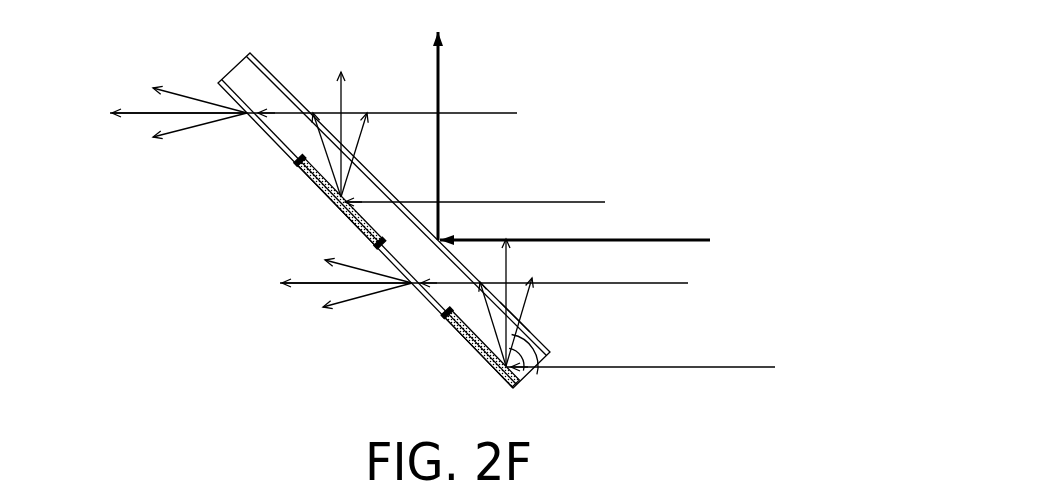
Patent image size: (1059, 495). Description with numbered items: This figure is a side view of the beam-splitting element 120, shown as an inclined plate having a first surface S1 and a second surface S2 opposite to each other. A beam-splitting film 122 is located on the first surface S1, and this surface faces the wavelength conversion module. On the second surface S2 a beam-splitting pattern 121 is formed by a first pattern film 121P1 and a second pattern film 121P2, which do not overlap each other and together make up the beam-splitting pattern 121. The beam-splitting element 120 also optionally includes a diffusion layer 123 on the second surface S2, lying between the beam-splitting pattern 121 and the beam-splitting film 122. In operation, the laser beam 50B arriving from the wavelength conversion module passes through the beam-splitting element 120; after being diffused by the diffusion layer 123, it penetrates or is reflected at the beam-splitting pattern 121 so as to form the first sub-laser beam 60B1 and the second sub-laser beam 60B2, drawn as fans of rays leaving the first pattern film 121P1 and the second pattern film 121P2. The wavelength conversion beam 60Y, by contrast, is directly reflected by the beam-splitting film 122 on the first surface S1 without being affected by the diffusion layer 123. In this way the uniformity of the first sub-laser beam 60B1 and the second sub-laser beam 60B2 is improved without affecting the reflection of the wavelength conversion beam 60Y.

The beam-splitting element 120 is at (500, 206).
The beam-splitting pattern 121 is at (462, 231).
The first pattern film 121P1 is at (378, 246).
The second pattern film 121P2 is at (473, 343).
The beam-splitting film 122 is at (250, 52).
The diffusion layer 123 is at (221, 82).
The first surface S1 is at (536, 336).
The second surface S2 is at (445, 318).
The laser beam 50B is at (658, 284).
The first sub-laser beam 60B1 is at (356, 268).
The second sub-laser beam 60B2 is at (530, 366).
The wavelength conversion beam 60Y is at (660, 239).